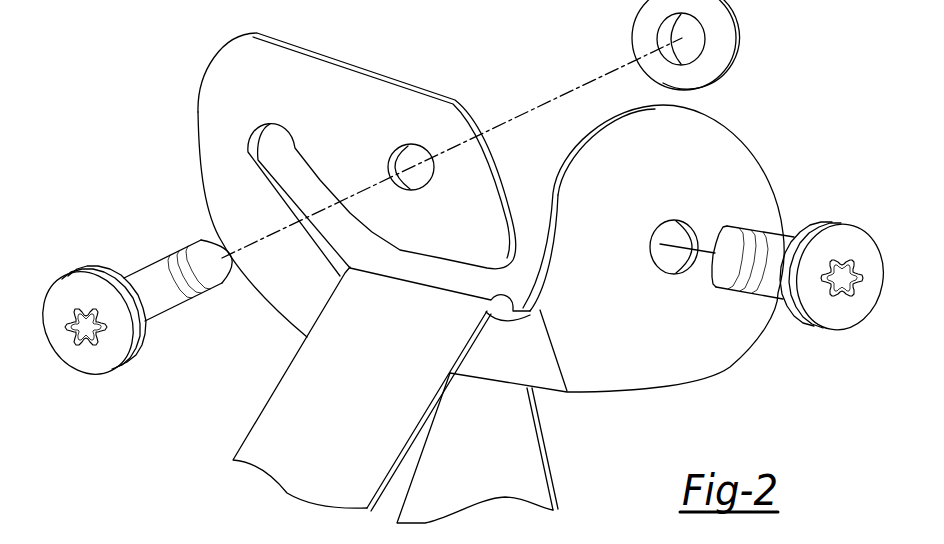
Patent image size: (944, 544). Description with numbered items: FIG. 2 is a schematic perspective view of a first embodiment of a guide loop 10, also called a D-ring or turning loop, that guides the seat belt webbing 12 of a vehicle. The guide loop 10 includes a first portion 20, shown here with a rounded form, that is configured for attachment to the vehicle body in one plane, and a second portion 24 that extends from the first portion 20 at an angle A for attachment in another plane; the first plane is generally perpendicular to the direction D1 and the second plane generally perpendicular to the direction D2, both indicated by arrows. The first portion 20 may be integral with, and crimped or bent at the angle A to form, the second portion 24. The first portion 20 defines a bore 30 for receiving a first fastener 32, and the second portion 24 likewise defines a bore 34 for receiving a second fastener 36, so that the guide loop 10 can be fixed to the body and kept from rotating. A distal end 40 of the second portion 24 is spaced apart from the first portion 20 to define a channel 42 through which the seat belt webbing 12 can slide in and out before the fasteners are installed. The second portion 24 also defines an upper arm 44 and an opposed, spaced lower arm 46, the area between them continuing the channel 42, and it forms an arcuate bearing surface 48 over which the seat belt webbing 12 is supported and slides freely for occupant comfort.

The guide loop 10 is at (766, 101).
The seat belt webbing 12 is at (372, 397).
The first portion 20 is at (764, 199).
The second portion 24 is at (232, 212).
The bore 30 is at (690, 221).
The first fastener 32 is at (815, 294).
The bore 34 is at (386, 157).
The second fastener 36 is at (129, 337).
The distal end 40 is at (500, 185).
The channel 42 is at (529, 263).
The upper arm 44 is at (314, 86).
The lower arm 46 is at (502, 361).
The arcuate bearing surface 48 is at (262, 177).
The angle A is at (620, 107).
The direction D1 is at (869, 287).
The direction D2 is at (66, 338).